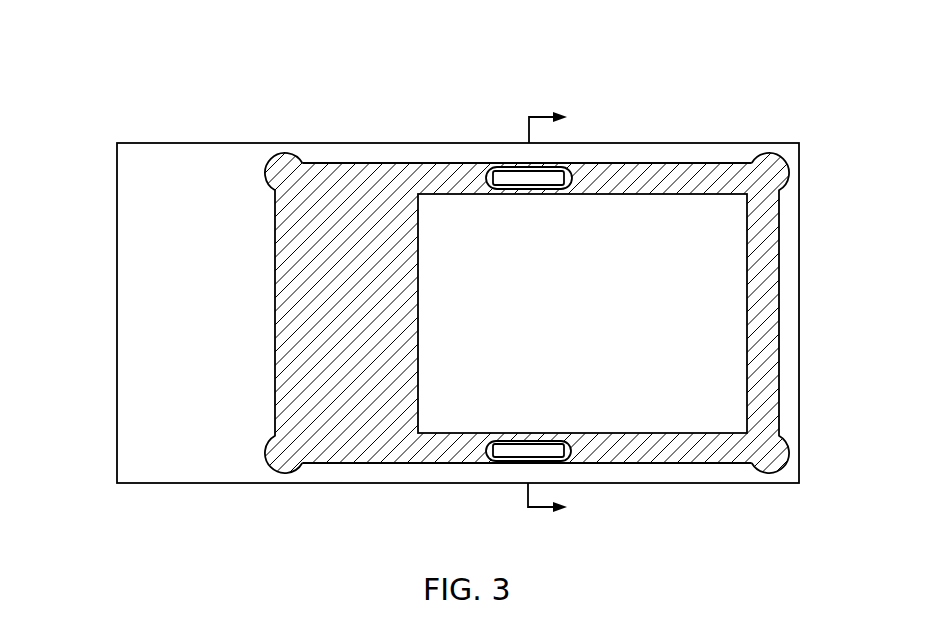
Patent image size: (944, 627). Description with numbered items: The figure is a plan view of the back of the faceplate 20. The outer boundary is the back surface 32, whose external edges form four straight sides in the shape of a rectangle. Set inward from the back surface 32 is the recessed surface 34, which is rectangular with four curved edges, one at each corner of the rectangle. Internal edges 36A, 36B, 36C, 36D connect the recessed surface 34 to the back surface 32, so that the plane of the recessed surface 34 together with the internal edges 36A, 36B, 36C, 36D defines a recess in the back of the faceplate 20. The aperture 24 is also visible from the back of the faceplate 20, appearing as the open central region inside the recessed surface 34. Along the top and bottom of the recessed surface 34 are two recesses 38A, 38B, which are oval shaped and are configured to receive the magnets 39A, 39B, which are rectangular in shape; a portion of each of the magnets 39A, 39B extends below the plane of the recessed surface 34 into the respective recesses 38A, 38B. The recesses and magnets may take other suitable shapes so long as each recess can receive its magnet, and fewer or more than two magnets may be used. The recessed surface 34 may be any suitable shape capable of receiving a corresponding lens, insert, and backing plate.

The faceplate 20 is at (205, 98).
The back surface 32 is at (202, 167).
The recessed surface 34 is at (516, 317).
The internal edge 36A is at (275, 323).
The internal edge 36B is at (358, 163).
The internal edge 36C is at (780, 400).
The internal edge 36D is at (340, 463).
The recess 38A is at (488, 178).
The recess 38B is at (485, 448).
The magnet 39A is at (548, 178).
The magnet 39B is at (542, 447).
The aperture 24 is at (723, 348).